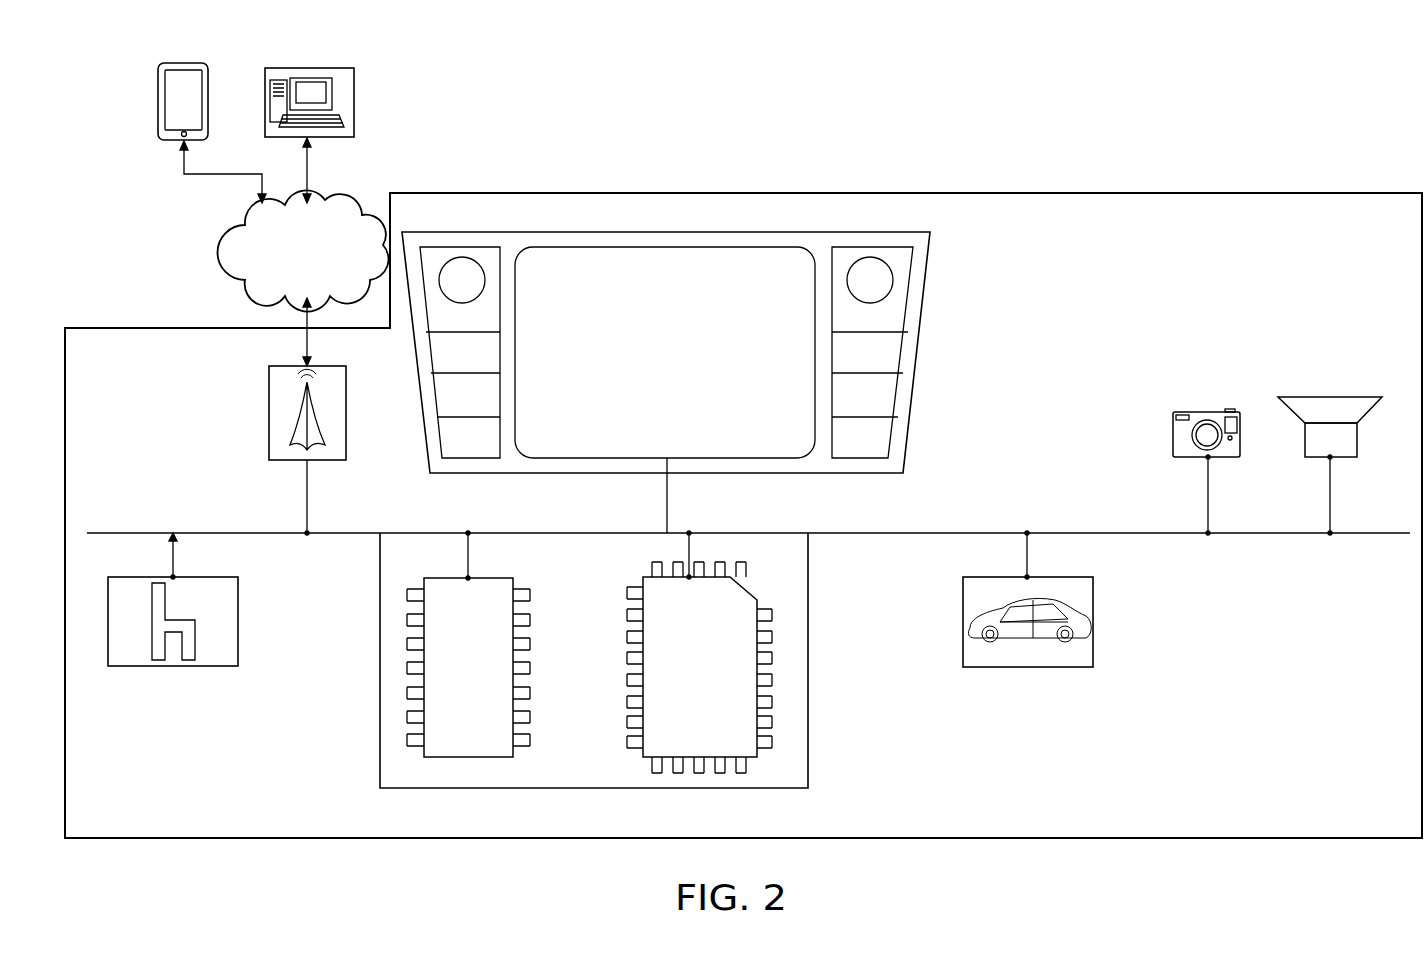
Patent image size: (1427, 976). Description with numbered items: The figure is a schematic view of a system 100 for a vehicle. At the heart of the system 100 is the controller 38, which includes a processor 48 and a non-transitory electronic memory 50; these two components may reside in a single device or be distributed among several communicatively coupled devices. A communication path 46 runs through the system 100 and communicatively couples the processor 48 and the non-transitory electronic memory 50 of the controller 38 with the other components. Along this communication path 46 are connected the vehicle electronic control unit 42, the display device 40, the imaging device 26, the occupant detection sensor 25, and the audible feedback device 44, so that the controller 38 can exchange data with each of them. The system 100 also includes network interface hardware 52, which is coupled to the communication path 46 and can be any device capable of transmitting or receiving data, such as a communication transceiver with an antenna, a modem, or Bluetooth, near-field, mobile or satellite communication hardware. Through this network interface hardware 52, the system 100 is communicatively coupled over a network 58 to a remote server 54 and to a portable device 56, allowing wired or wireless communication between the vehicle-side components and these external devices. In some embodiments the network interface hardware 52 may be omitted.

The system 100 is at (1212, 145).
The occupant detection sensor 25 is at (173, 667).
The imaging device 26 is at (1208, 412).
The controller 38 is at (808, 662).
The display device 40 is at (930, 262).
The vehicle electronic control unit 42 is at (1093, 622).
The audible feedback device 44 is at (1330, 397).
The communication path 46 is at (1095, 533).
The processor 48 is at (500, 578).
The non-transitory electronic memory 50 is at (730, 578).
The network interface hardware 52 is at (269, 413).
The server 54 is at (355, 102).
The portable device 56 is at (155, 100).
The network 58 is at (232, 245).